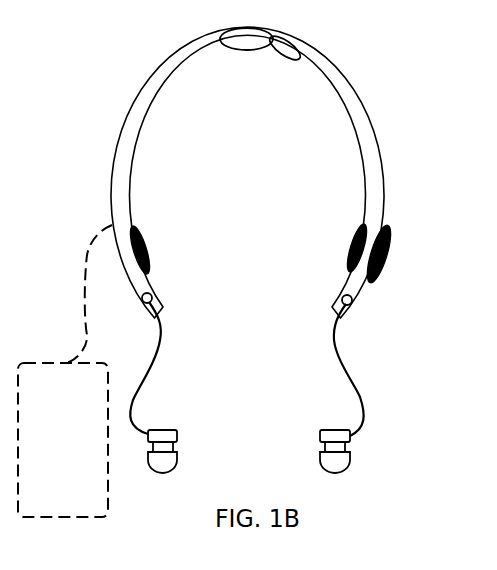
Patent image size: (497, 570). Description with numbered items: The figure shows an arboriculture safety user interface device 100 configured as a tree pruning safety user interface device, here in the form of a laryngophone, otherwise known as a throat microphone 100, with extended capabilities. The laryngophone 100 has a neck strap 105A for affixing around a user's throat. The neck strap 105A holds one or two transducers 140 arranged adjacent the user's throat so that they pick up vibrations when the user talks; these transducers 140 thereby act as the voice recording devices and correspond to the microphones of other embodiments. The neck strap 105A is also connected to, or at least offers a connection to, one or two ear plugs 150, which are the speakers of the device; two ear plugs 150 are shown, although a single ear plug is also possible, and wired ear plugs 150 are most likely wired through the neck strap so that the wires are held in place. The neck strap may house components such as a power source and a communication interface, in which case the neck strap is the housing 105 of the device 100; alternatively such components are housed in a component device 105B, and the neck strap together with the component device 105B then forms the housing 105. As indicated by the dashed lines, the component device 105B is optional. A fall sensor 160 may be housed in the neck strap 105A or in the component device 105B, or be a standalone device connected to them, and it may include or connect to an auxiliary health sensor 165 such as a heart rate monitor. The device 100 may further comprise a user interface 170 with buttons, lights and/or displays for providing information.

The arboriculture safety user interface device 100 is at (138, 62).
The housing 105 is at (110, 168).
The neck strap 105A is at (201, 172).
The component device 105B is at (65, 371).
The transducers 140 is at (352, 257).
The ear plugs 150 is at (320, 432).
The fall sensor 160 is at (255, 50).
The auxiliary health sensor 165 is at (300, 58).
The user interface 170 is at (380, 262).